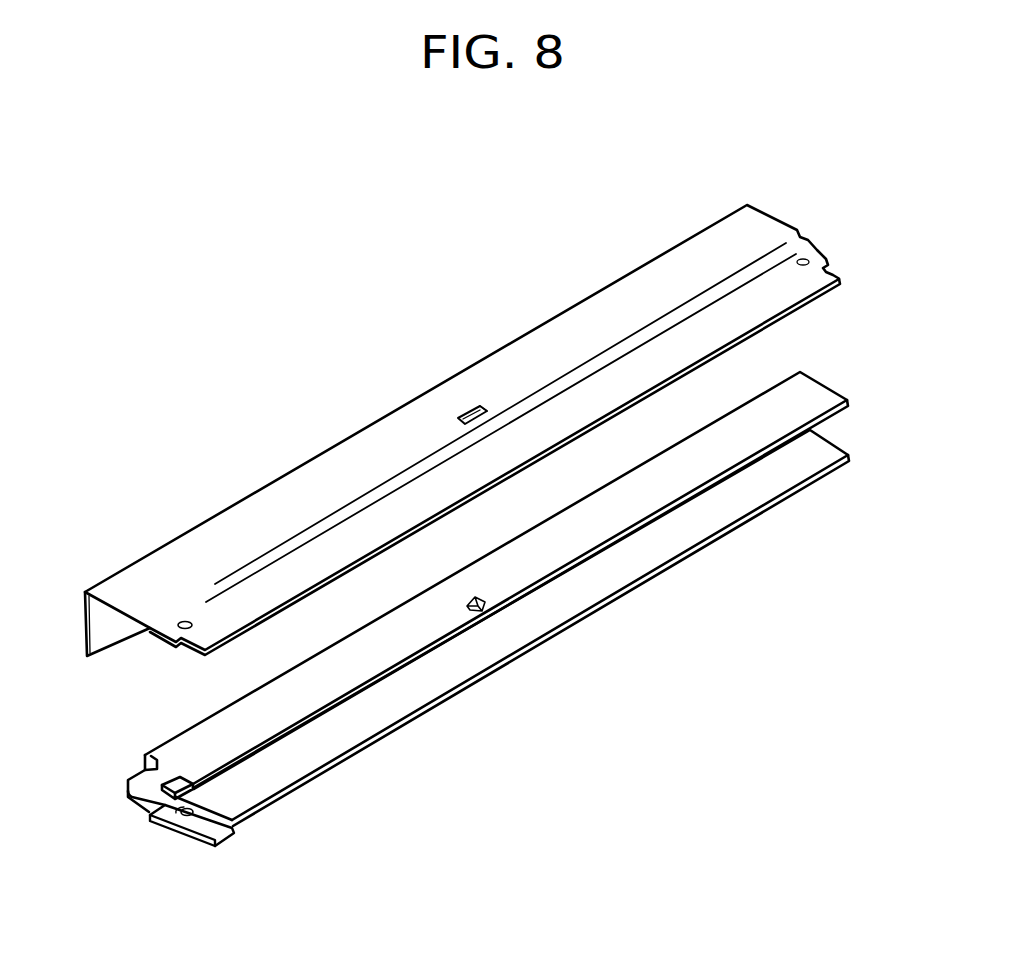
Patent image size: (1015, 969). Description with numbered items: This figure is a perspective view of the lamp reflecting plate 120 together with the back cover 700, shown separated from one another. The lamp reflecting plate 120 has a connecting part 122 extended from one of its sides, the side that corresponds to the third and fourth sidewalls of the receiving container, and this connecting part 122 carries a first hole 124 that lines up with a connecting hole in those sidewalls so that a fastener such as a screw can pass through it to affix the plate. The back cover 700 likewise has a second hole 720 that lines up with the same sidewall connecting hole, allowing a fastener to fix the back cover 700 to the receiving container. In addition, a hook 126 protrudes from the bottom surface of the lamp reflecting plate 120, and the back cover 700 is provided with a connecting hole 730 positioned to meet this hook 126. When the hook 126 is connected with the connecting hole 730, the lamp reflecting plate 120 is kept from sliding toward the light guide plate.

The back cover 700 is at (799, 229).
The connecting hole 730 is at (480, 410).
The second hole 720 is at (171, 622).
The lamp reflecting plate 120 is at (845, 384).
The connecting part 122 is at (222, 832).
The first hole 124 is at (165, 806).
The hook 126 is at (476, 602).